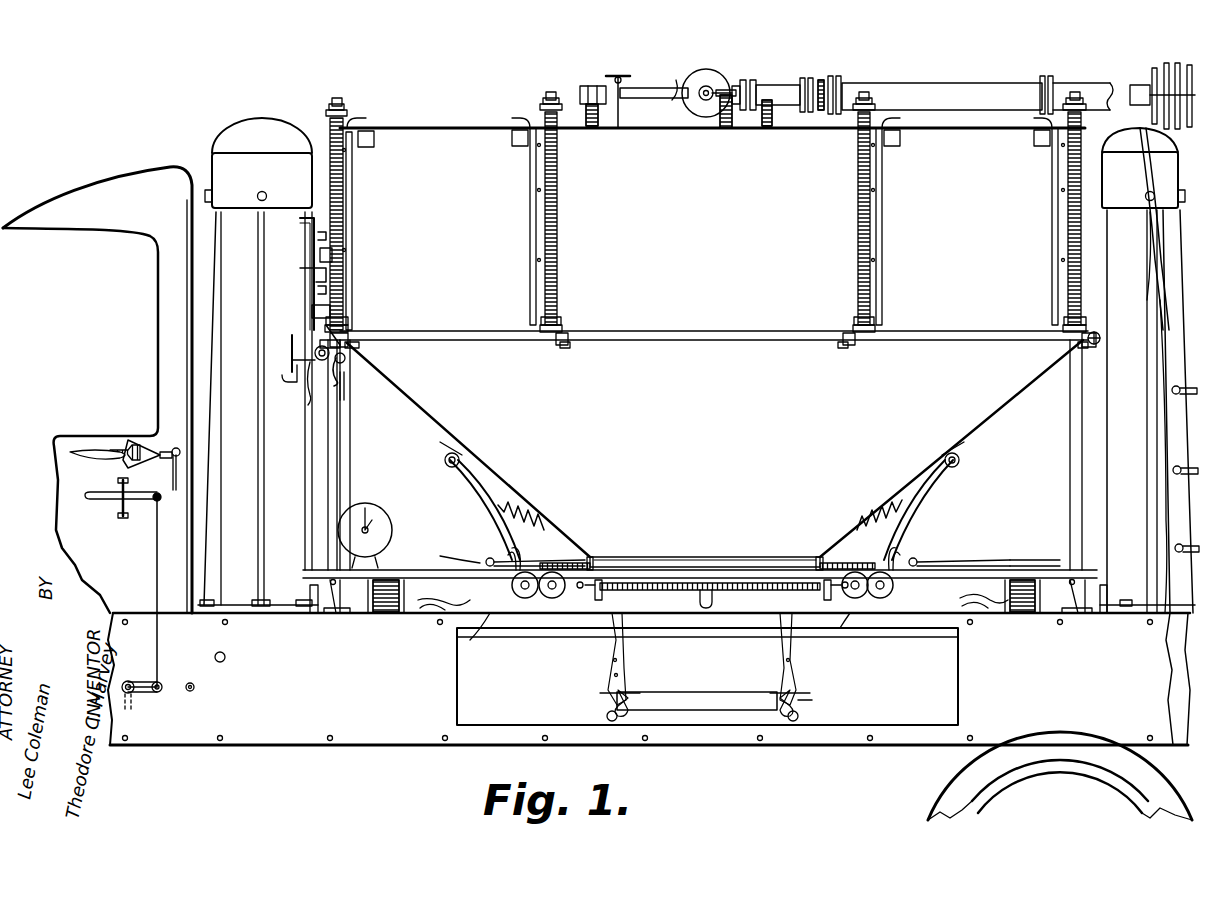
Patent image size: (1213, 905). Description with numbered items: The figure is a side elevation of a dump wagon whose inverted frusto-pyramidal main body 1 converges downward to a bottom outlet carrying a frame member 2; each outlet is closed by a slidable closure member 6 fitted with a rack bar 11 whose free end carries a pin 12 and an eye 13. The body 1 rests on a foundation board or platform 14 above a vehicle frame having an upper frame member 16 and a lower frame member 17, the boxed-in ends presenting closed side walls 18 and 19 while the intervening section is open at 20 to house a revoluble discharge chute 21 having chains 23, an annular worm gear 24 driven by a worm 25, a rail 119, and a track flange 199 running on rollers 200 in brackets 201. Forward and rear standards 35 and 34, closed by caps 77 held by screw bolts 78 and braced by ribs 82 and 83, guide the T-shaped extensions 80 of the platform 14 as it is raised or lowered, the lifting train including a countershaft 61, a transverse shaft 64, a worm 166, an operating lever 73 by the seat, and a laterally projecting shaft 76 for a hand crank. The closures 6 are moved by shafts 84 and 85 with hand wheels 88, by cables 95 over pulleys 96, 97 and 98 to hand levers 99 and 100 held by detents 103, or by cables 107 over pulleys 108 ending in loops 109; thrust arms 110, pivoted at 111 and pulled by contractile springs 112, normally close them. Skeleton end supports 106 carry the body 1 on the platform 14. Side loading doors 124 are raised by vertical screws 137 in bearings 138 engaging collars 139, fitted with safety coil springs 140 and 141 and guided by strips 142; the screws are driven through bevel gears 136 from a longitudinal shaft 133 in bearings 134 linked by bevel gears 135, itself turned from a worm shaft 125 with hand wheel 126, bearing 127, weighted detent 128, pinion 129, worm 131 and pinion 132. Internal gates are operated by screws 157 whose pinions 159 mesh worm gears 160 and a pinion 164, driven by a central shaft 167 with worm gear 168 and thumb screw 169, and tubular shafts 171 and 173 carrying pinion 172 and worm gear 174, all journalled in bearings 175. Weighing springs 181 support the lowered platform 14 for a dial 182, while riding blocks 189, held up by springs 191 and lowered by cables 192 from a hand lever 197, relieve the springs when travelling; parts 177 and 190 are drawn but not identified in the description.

The main body 1 is at (715, 448).
The frame member 2 is at (700, 560).
The slidable closure member 6 is at (705, 553).
The rack bar 11 is at (548, 563).
The laterally extending pin 12 is at (508, 555).
The terminal eye 13 is at (486, 560).
The foundation board or platform 14 is at (1050, 556).
The upper frame member 16 is at (1178, 610).
The lower frame member 17 is at (995, 735).
The closed side wall 18 is at (649, 679).
The closed side wall 19 is at (1163, 679).
The open side wall section 20 is at (707, 676).
The revoluble discharge chute 21 is at (697, 688).
The chains 23 is at (800, 716).
The annular rack bar or worm gear 24 is at (762, 567).
The worm 25 is at (850, 635).
The rear standard 34 is at (1160, 520).
The forward standard 35 is at (262, 522).
The countershaft 61 is at (935, 640).
The transversely extending shaft 64 is at (222, 662).
The operating lever 73 is at (115, 497).
The laterally projecting shaft 76 is at (192, 692).
The cap 77 is at (230, 153).
The screw bolt 78 is at (1170, 212).
The T-shaped extension 80 is at (306, 570).
The under brace or rib 82 is at (262, 518).
The side brace or rib 83 is at (208, 500).
The transversely extending shaft 84 is at (520, 597).
The transversely extending shaft 85 is at (880, 598).
The hand wheel 88 is at (918, 590).
The cable 95 is at (327, 495).
The pulley 96 is at (303, 576).
The pulley 97 is at (312, 312).
The pulley 98 is at (320, 254).
The hand-operated lever 99 is at (316, 280).
The hand-operated lever 100 is at (312, 240).
The detent 103 is at (318, 236).
The skeleton end support 106 is at (338, 478).
The flexible cable 107 is at (450, 562).
The pulley 108 is at (440, 556).
The loop 109 is at (711, 595).
The thrust arm 110 is at (490, 500).
The pivot 111 is at (445, 460).
The contractile spring 112 is at (505, 510).
The rail 119 is at (800, 698).
The side loading door 124 is at (712, 186).
The worm shaft 125 is at (308, 402).
The hand wheel 126 is at (282, 378).
The bearing 127 is at (340, 380).
The weighted detent 128 is at (344, 400).
The pinion 129 is at (292, 356).
The worm 131 is at (315, 353).
The pinion 132 is at (320, 342).
The longitudinally extending shaft 133 is at (477, 340).
The bearing member 134 is at (358, 350).
The bevel gears 135 is at (1097, 344).
The bevel gear 136 is at (352, 330).
The vertical screw 137 is at (345, 268).
The bearing 138 is at (328, 112).
The threaded socket or collar 139 is at (374, 140).
The coil spring 140 is at (345, 106).
The coil spring 141 is at (350, 310).
The guide strip 142 is at (352, 244).
The vertical screw 157 is at (724, 128).
The pinion or gear wheel 159 is at (584, 100).
The worm gear 160 is at (696, 115).
The pinion or gear wheel 164 is at (698, 98).
The worm 166 is at (584, 86).
The central shaft 167 is at (680, 78).
The screw or worm gear 168 is at (675, 92).
The thumb screw 169 is at (626, 78).
The tubular shaft 171 is at (790, 88).
The bevel gear or pinion 172 is at (734, 86).
The tubular shaft 173 is at (956, 74).
The worm gear 174 is at (815, 78).
The bearing 175 is at (845, 85).
The pulley 177 is at (1190, 65).
The weighing spring 181 is at (376, 612).
The stationary dial 182 is at (385, 505).
The riding block 189 is at (338, 613).
The base 190 is at (345, 613).
The spring 191 is at (312, 617).
The flexible cable 192 is at (368, 628).
The hand-operated lever 197 is at (108, 458).
The downwardly turned flange 199 is at (638, 628).
The roller or pulley 200 is at (606, 628).
The bracket 201 is at (718, 583).